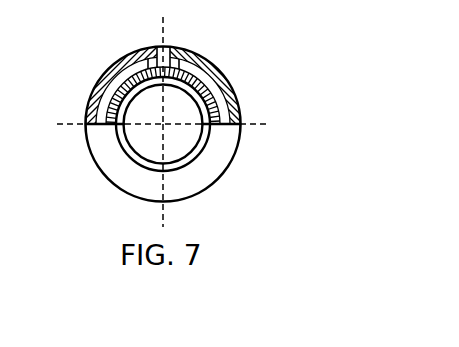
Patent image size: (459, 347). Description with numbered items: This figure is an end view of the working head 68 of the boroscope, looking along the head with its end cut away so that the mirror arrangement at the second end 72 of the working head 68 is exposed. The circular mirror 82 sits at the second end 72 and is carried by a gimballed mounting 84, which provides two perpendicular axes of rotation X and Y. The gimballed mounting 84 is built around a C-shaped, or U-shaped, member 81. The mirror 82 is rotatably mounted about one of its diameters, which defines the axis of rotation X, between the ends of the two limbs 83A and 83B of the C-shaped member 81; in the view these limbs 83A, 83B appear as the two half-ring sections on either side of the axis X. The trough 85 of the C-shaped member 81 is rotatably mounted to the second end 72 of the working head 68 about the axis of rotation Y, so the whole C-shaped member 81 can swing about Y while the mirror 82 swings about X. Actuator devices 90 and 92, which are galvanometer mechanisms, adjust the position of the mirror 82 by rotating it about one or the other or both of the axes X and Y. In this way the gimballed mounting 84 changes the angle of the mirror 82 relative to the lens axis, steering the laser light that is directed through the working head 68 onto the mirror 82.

The second end of the working head 72 is at (243, 117).
The limb of the C-shaped member 83A is at (92, 108).
The limb of the C-shaped member 83B is at (233, 114).
The trough of the C-shaped member 85 is at (178, 46).
The actuator device 92 is at (141, 64).
The C-shaped member 81 is at (118, 82).
The gimballed mounting 84 is at (220, 106).
The working head 68 is at (238, 133).
The mirror 82 is at (182, 138).
The actuator device 90 is at (117, 127).
The axis of rotation X is at (68, 127).
The axis of rotation Y is at (158, 30).